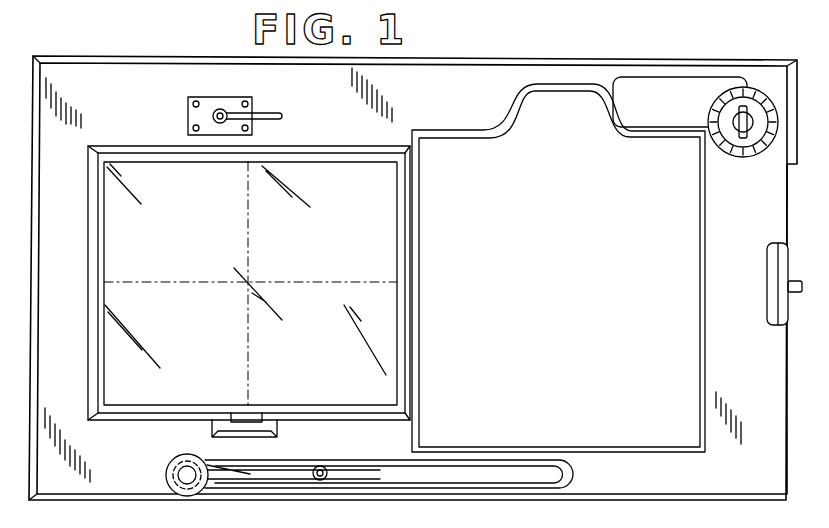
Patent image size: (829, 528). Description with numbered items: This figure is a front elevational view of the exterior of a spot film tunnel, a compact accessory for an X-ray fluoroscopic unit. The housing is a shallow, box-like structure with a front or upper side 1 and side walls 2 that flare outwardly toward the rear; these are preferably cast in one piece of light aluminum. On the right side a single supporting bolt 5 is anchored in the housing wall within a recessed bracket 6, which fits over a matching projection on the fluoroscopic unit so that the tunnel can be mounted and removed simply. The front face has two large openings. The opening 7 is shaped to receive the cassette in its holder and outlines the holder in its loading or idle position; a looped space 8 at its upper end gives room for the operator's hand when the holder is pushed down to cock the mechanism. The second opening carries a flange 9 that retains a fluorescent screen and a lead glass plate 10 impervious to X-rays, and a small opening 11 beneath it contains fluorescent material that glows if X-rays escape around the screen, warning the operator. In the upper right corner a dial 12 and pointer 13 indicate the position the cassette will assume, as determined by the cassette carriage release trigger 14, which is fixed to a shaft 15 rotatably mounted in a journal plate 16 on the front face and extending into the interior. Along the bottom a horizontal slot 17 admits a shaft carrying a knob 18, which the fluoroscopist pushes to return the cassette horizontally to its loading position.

The front or upper side 1 is at (104, 490).
The side walls 2 is at (72, 57).
The supporting bolt 5 is at (790, 286).
The recessed bracket 6 is at (776, 243).
The opening 7 is at (452, 147).
The looped space 8 is at (540, 104).
The flange 9 is at (310, 150).
The lead glass plate 10 is at (350, 170).
The opening 11 is at (248, 425).
The dial 12 is at (727, 130).
The pointer 13 is at (742, 134).
The cassette carriage release trigger 14 is at (270, 113).
The shaft 15 is at (221, 108).
The journal plate 16 is at (190, 100).
The horizontal slot 17 is at (508, 470).
The knob 18 is at (186, 486).